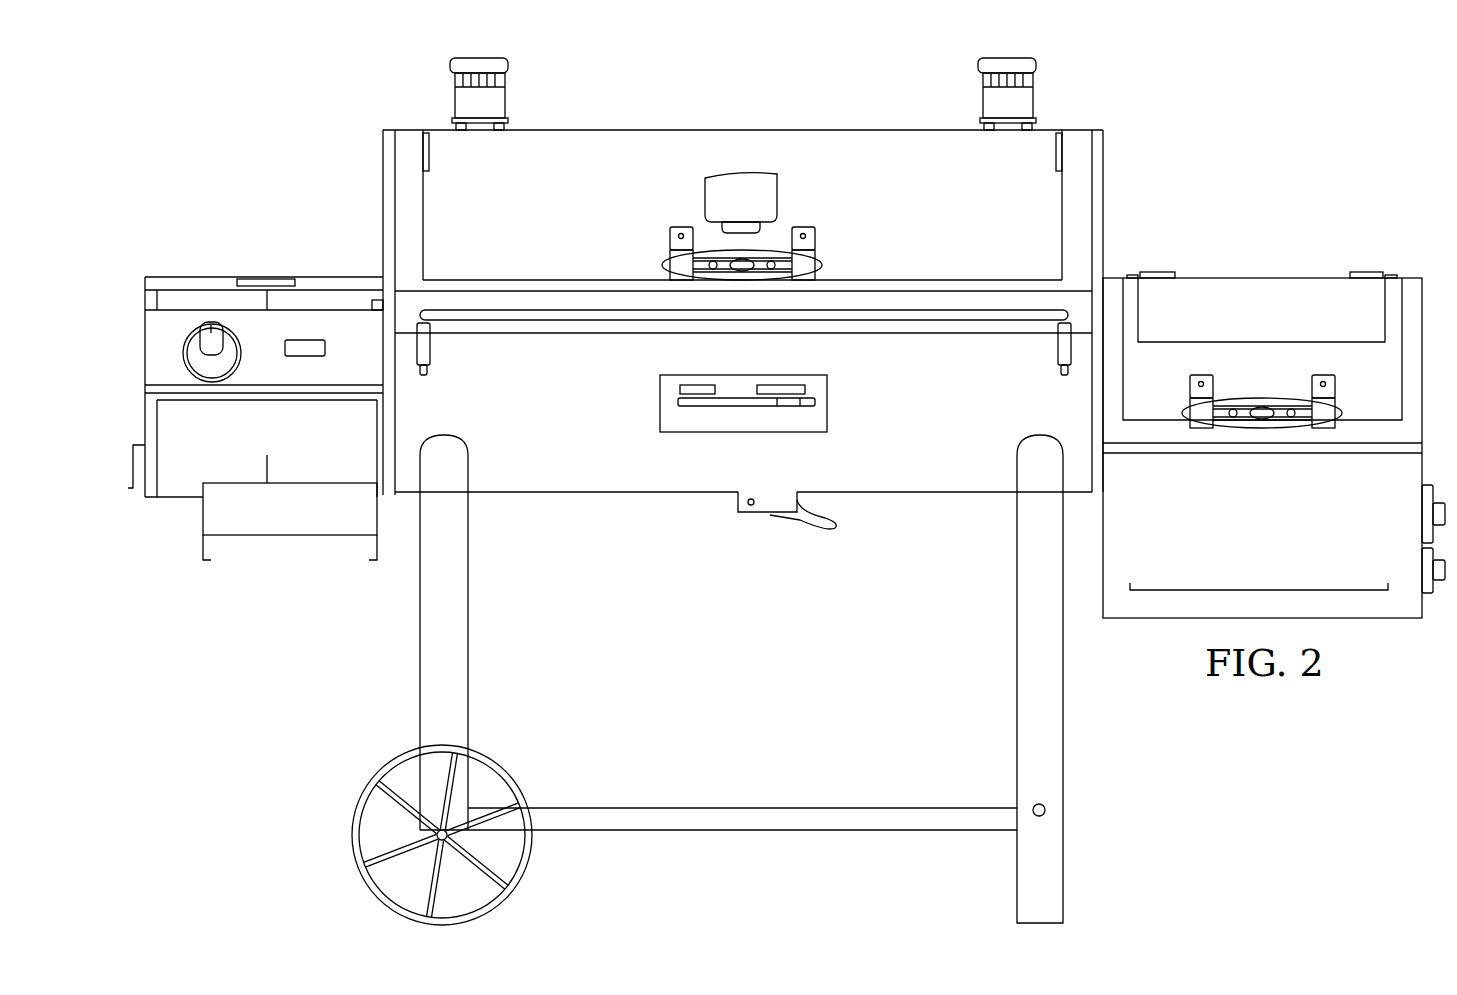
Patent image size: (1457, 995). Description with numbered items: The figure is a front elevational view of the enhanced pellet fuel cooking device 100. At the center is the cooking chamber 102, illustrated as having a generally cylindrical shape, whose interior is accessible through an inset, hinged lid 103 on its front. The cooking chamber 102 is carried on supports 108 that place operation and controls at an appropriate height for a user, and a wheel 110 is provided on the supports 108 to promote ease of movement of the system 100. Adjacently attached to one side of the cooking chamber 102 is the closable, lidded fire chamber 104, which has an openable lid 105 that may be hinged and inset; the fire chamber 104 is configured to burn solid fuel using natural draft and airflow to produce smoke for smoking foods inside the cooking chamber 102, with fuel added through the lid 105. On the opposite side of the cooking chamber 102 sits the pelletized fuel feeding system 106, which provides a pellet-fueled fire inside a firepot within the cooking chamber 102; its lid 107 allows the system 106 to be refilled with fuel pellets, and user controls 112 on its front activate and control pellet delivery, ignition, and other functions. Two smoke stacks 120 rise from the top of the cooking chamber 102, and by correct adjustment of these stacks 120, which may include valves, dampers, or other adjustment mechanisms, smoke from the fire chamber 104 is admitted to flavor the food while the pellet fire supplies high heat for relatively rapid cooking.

The cooking device 100 is at (1331, 108).
The cooking chamber 102 is at (1105, 153).
The hinged lid 103 is at (745, 138).
The fire chamber 104 is at (1308, 276).
The openable lid 105 is at (1237, 288).
The pelletized fuel feeding system 106 is at (155, 376).
The lid 107 is at (197, 277).
The supports 108 is at (1066, 692).
The wheels 110 is at (383, 904).
The user controls 112 is at (182, 352).
The smoke stacks 120 is at (450, 66).